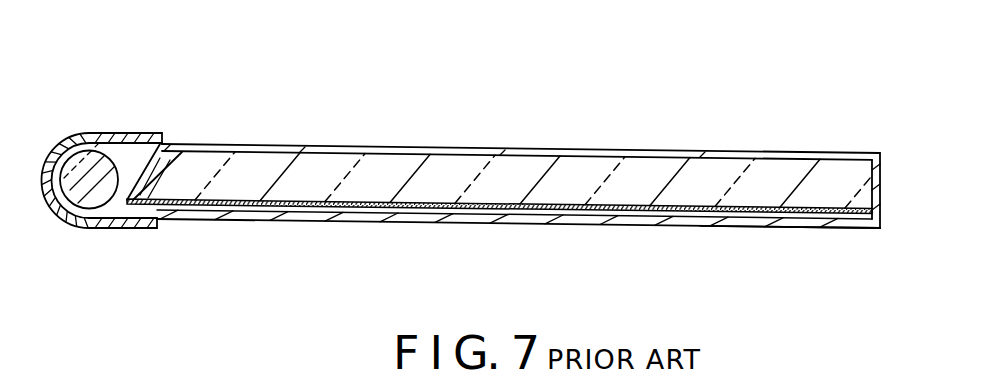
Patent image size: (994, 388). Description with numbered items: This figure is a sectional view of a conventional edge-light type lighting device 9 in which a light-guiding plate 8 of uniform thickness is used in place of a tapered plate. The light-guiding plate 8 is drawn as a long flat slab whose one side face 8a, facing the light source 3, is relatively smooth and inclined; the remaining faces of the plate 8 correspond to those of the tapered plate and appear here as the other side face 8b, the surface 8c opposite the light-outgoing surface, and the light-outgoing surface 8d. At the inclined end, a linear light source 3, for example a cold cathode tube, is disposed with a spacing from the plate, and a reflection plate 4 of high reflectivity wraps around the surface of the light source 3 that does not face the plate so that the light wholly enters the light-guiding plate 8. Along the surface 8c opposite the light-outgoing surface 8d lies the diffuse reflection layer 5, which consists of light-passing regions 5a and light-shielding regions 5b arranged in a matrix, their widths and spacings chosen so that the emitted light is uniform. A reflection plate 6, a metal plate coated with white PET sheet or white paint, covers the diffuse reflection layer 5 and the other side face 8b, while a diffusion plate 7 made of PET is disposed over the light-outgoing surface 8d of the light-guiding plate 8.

The light source 3 is at (80, 134).
The reflection plate 4 is at (103, 228).
The diffuse reflection layer 5 is at (290, 221).
The light-passing regions 5a is at (648, 212).
The light-shielding regions 5b is at (535, 214).
The reflection plate 6 is at (808, 223).
The diffusion plate 7 is at (638, 150).
The light-guiding plate 8 is at (546, 165).
The one side face 8a is at (141, 180).
The frame end wall 8b is at (875, 153).
The frame bottom flange 8c is at (437, 216).
The frame top flange 8d is at (433, 148).
The lighting device 9 is at (784, 97).